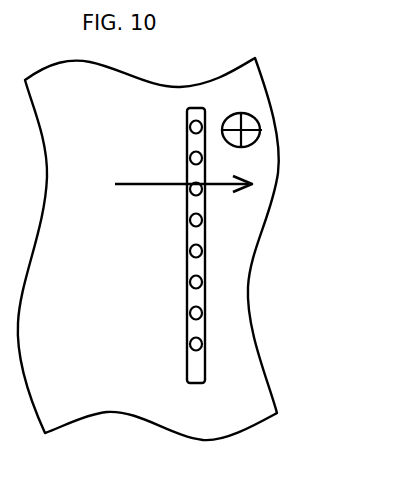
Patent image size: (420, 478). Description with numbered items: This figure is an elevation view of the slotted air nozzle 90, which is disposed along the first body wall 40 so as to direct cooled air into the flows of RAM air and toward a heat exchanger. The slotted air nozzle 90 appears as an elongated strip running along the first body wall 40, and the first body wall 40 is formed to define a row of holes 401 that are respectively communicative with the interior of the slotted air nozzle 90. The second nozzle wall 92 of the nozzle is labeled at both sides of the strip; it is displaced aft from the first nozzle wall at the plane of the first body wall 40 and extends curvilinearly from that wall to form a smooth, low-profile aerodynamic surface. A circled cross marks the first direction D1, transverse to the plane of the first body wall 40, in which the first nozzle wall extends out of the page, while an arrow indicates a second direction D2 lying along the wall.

The first body wall 40 is at (87, 114).
The slotted air nozzle 90 is at (187, 145).
The second nozzle wall 92 is at (187, 358).
The holes 401 is at (193, 219).
The first direction D1 is at (253, 118).
The second direction D2 is at (134, 184).